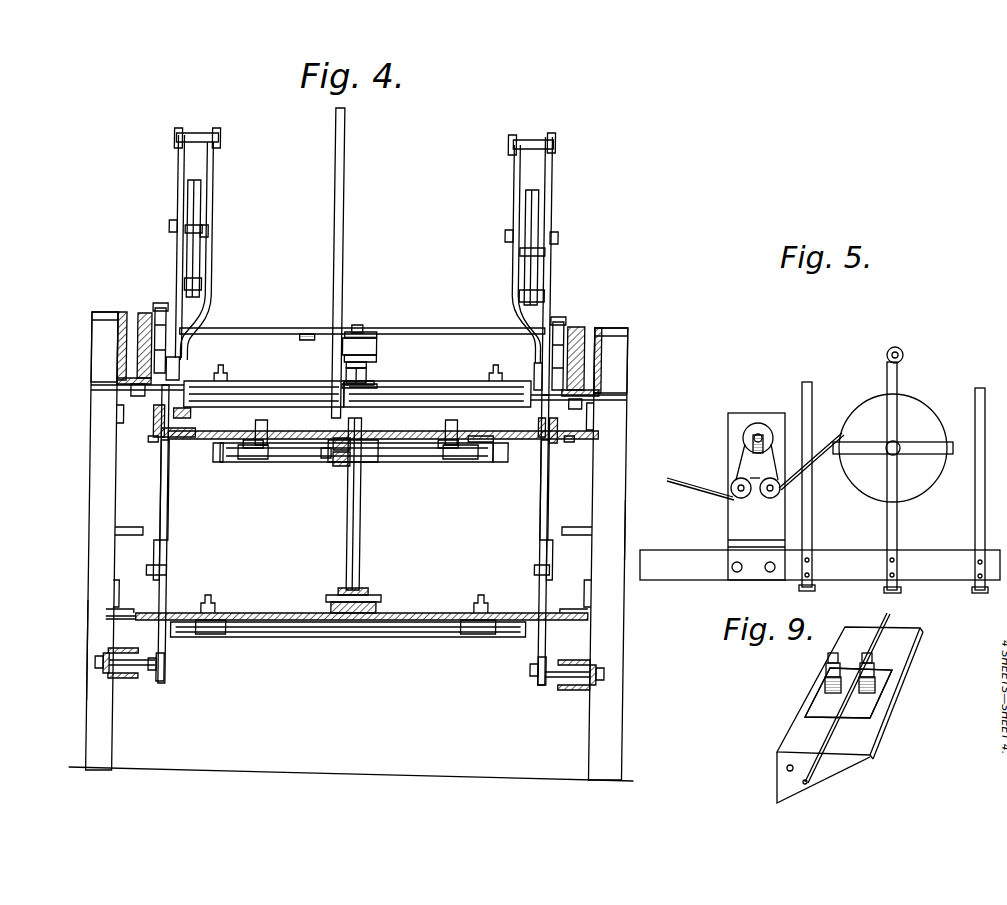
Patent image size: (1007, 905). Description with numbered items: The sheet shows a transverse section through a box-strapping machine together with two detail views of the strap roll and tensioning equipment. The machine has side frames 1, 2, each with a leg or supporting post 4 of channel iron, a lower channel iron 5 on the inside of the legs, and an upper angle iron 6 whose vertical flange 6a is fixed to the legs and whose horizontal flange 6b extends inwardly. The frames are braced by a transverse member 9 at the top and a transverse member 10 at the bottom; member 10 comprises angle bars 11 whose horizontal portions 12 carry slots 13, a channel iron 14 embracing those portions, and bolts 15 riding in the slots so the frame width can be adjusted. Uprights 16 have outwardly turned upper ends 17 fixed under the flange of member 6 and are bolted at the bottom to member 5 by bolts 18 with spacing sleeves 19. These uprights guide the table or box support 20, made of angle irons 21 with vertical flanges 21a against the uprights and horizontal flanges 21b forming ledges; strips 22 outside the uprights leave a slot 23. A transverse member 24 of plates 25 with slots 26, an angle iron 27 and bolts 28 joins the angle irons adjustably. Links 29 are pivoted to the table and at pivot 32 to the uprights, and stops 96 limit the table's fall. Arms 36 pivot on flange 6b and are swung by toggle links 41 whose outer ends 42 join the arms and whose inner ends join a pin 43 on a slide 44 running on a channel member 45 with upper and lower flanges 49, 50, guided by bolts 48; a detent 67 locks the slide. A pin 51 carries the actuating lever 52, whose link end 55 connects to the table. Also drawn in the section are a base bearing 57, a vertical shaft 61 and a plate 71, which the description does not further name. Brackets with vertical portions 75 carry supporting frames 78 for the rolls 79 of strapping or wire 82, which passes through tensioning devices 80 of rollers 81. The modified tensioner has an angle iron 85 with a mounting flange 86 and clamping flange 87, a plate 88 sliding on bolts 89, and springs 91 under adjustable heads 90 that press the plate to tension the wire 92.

In FIG. 4, the side frame 1 is at (92, 600).
In FIG. 4, the side frame 2 is at (634, 530).
In FIG. 4, the leg or supporting post 4 is at (595, 752).
In FIG. 4, the lower member or channel iron 5 is at (128, 679).
In FIG. 4, the upper longitudinally extending member or angle iron 6 is at (118, 345).
In FIG. 4, the vertical flange 6a is at (638, 333).
In FIG. 4, the lower inwardly extending horizontal flange 6b is at (643, 392).
In FIG. 4, the transversely extending member 9 is at (264, 384).
In FIG. 4, the transversely extending member 10 is at (290, 638).
In FIG. 4, the angle bar 11 is at (118, 412).
In FIG. 4, the horizontal portion 12 is at (130, 621).
In FIG. 4, the slot 13 is at (225, 636).
In FIG. 4, the channel iron 14 is at (438, 384).
In FIG. 4, the bolt 15 is at (488, 603).
In FIG. 4, the upright 16 is at (170, 517).
In FIG. 4, the outwardly turned upper end 17 is at (92, 386).
In FIG. 4, the bolt 18 is at (100, 662).
In FIG. 4, the sleeve 19 is at (166, 665).
In FIG. 4, the table or box support 20 is at (275, 462).
In FIG. 4, the longitudinally extending angle iron 21 is at (383, 423).
In FIG. 4, the vertical flange 21a is at (359, 422).
In FIG. 4, the lower horizontal inwardly extending flange 21b is at (205, 442).
In FIG. 4, the strip 22 is at (357, 424).
In FIG. 4, the space or slot 23 is at (163, 445).
In FIG. 4, the transverse member 24 is at (158, 442).
In FIG. 4, the inwardly extending plate 25 is at (225, 450).
In FIG. 4, the slot 26 is at (245, 458).
In FIG. 4, the angle iron 27 is at (380, 455).
In FIG. 4, the bolt 28 is at (340, 470).
In FIG. 4, the link 29 is at (158, 545).
In FIG. 4, the pivotal connection 32 is at (170, 570).
In FIG. 4, the longitudinally extending arm 36 is at (144, 312).
In FIG. 4, the transversely extending link 41 is at (240, 330).
In FIG. 4, the outer end 42 is at (159, 304).
In FIG. 4, the pin 43 is at (358, 325).
In FIG. 4, the longitudinal slide 44 is at (377, 345).
In FIG. 4, the longitudinal channel member 45 is at (347, 374).
In FIG. 4, the guiding bolt 48 is at (370, 333).
In FIG. 4, the upper horizontal flange 49 is at (377, 360).
In FIG. 4, the lower horizontal flange 50 is at (375, 383).
In FIG. 4, the laterally projecting pin 51 is at (308, 333).
In FIG. 4, the actuating lever 52 is at (343, 153).
In FIG. 4, the end of double link 55 is at (350, 462).
In FIG. 4, the base bearing 57 is at (363, 588).
In FIG. 4, the vertical shaft 61 is at (340, 514).
In FIG. 4, the detent 67 is at (347, 364).
In FIG. 4, the plate 71 is at (345, 386).
In FIG. 4, the longitudinally extending vertical portion 75 is at (181, 366).
In FIG. 5, the longitudinally extending vertical portion 75 is at (710, 572).
In FIG. 4, the supporting frame 78 is at (175, 160).
In FIG. 5, the supporting frame 78 is at (893, 470).
In FIG. 5, the roll of binding material 79 is at (922, 414).
In FIG. 4, the tensioning device 80 is at (176, 237).
In FIG. 5, the tensioning device 80 is at (748, 420).
In FIG. 4, the roller 81 is at (202, 237).
In FIG. 5, the roller 81 is at (745, 440).
In FIG. 4, the strapping or wire 82 is at (190, 262).
In FIG. 9, the angle iron 85 is at (850, 706).
In FIG. 9, the flange 86 is at (776, 762).
In FIG. 9, the clamping flange 87 is at (880, 700).
In FIG. 9, the coöperating plate 88 is at (818, 708).
In FIG. 9, the bolt 89 is at (827, 655).
In FIG. 9, the adjustable head 90 is at (826, 670).
In FIG. 9, the spring 91 is at (825, 685).
In FIG. 9, the wire 92 is at (888, 613).
In FIG. 4, the stop 96 is at (354, 505).